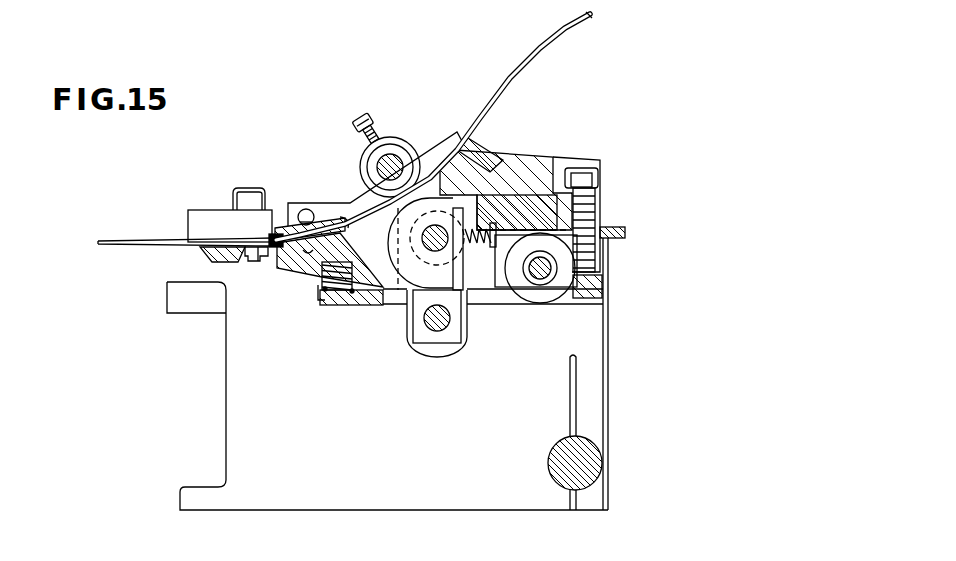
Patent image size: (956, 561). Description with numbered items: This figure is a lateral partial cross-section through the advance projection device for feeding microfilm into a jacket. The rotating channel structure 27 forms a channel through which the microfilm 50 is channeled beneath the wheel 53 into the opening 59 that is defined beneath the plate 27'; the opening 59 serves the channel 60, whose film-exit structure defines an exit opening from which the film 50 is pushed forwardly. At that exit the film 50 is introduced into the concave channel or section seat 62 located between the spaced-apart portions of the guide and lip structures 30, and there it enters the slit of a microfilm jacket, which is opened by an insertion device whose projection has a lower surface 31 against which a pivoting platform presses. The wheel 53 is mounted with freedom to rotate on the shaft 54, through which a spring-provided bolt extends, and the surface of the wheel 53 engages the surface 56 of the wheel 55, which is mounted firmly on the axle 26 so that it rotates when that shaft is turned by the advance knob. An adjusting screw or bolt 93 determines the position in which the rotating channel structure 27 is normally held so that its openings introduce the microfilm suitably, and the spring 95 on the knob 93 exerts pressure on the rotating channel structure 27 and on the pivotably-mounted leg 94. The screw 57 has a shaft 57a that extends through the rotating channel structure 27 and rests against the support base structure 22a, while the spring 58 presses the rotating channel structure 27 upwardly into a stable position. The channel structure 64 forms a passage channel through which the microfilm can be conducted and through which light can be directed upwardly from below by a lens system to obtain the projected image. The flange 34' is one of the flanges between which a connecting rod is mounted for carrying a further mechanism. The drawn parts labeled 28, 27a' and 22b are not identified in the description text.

The wheel 53 is at (387, 130).
The shaft 54 is at (392, 160).
The channel structure 27 is at (468, 193).
The clamp piece 28 is at (470, 143).
The surface of wheel 56 is at (493, 157).
The spring 95 is at (557, 157).
The microfilm 50 is at (533, 58).
The screw 57 is at (596, 210).
The adjusting screw 93 is at (623, 232).
The shaft 57a is at (604, 276).
The support base structure 22a is at (607, 290).
The axle 26 is at (462, 258).
The opening 59 is at (346, 224).
The plate 27' is at (312, 203).
The channel 60 is at (280, 233).
The guide and lip structures 30 is at (193, 217).
The lower surface 31 is at (197, 243).
The concave channel or section seat 62 is at (262, 253).
The channel structure 64 is at (270, 256).
The spring 27a' is at (321, 281).
The spring 58 is at (323, 303).
The base plate 22b is at (362, 307).
The wheel 55 is at (459, 300).
The pivotably-mounted leg 94 is at (456, 314).
The flange 34' is at (381, 396).